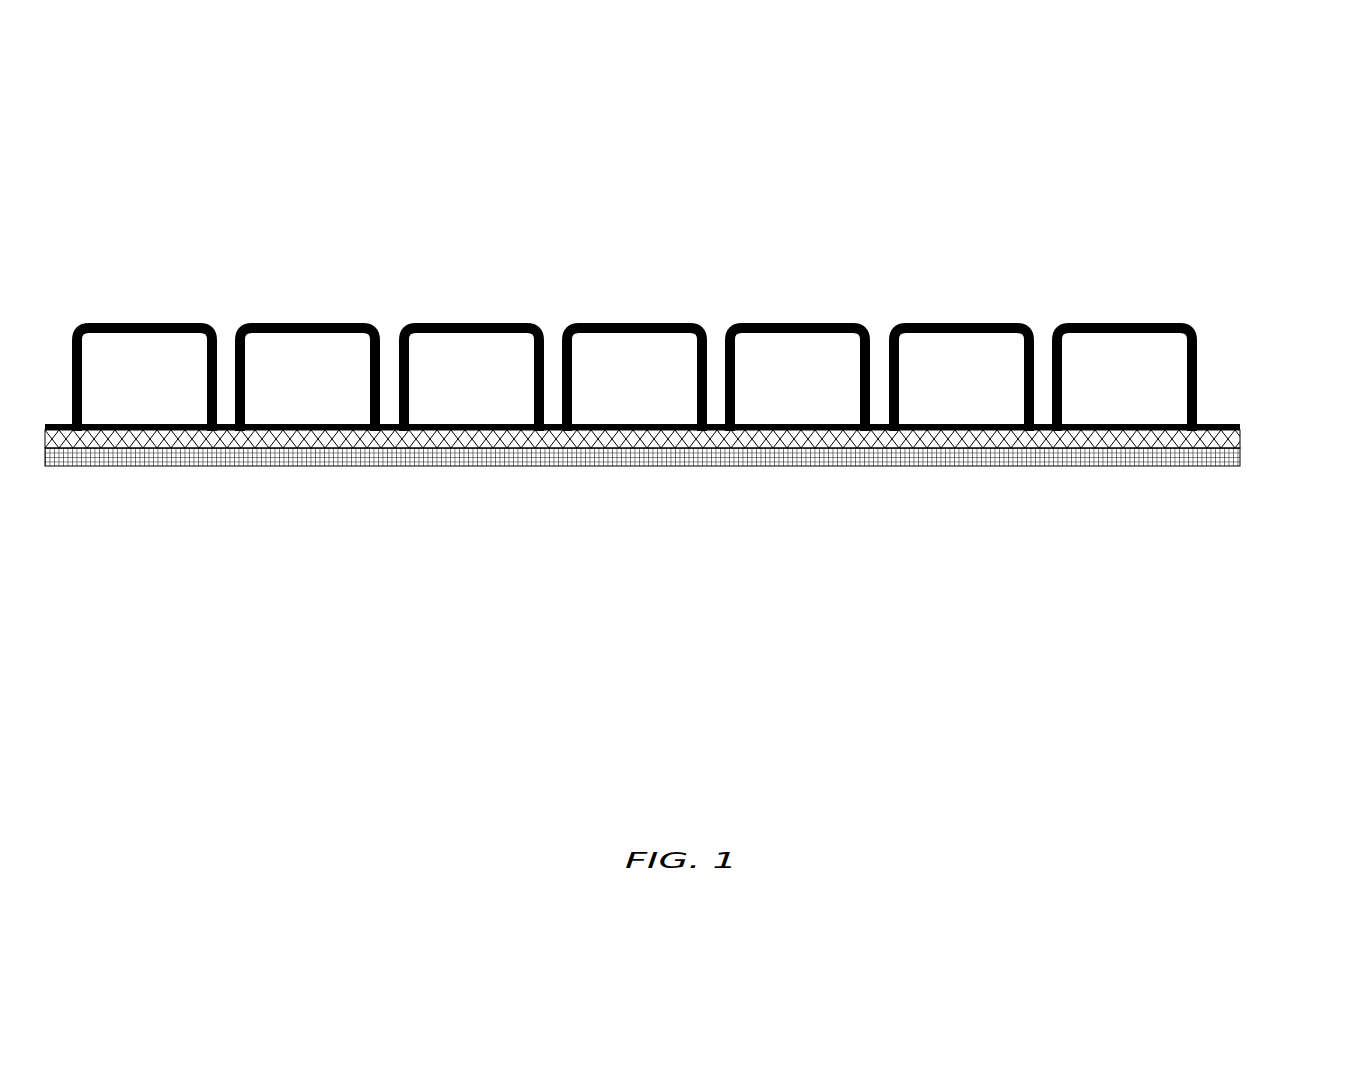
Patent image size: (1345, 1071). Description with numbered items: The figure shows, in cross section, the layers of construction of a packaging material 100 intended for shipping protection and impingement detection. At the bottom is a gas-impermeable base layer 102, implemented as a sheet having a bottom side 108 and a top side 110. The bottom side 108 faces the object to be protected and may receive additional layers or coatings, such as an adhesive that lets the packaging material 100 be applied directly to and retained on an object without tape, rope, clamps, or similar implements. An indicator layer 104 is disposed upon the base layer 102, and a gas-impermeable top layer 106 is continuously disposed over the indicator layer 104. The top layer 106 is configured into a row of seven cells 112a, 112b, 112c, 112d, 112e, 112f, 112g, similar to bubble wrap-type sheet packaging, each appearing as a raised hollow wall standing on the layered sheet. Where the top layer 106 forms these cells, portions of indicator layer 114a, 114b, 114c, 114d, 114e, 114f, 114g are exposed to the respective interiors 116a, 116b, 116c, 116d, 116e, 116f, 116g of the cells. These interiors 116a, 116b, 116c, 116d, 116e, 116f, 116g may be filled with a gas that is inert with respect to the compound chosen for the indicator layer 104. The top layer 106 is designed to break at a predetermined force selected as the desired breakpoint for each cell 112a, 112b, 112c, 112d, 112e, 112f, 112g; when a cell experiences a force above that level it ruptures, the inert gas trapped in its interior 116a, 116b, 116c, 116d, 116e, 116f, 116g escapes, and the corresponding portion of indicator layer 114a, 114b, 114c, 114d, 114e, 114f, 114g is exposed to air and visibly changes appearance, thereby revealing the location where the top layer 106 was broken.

The packaging material 100 is at (1184, 140).
The gas-impermeable base layer 102 is at (1222, 462).
The indicator layer 104 is at (1238, 440).
The gas-impermeable top layer 106 is at (1221, 426).
The bottom side 108 is at (258, 470).
The top side 110 is at (50, 428).
The cell 112a is at (168, 322).
The cell 112b is at (331, 322).
The cell 112c is at (483, 322).
The cell 112d is at (660, 322).
The cell 112e is at (818, 322).
The cell 112f is at (972, 322).
The cell 112g is at (1138, 322).
The portion of indicator layer 114a is at (129, 427).
The portion of indicator layer 114b is at (292, 427).
The portion of indicator layer 114c is at (456, 427).
The portion of indicator layer 114d is at (626, 427).
The portion of indicator layer 114e is at (791, 427).
The portion of indicator layer 114f is at (952, 427).
The portion of indicator layer 114g is at (1111, 427).
The interior 116a is at (162, 390).
The interior 116b is at (336, 392).
The interior 116c is at (500, 395).
The interior 116d is at (657, 393).
The interior 116e is at (830, 393).
The interior 116f is at (990, 393).
The interior 116g is at (1147, 393).